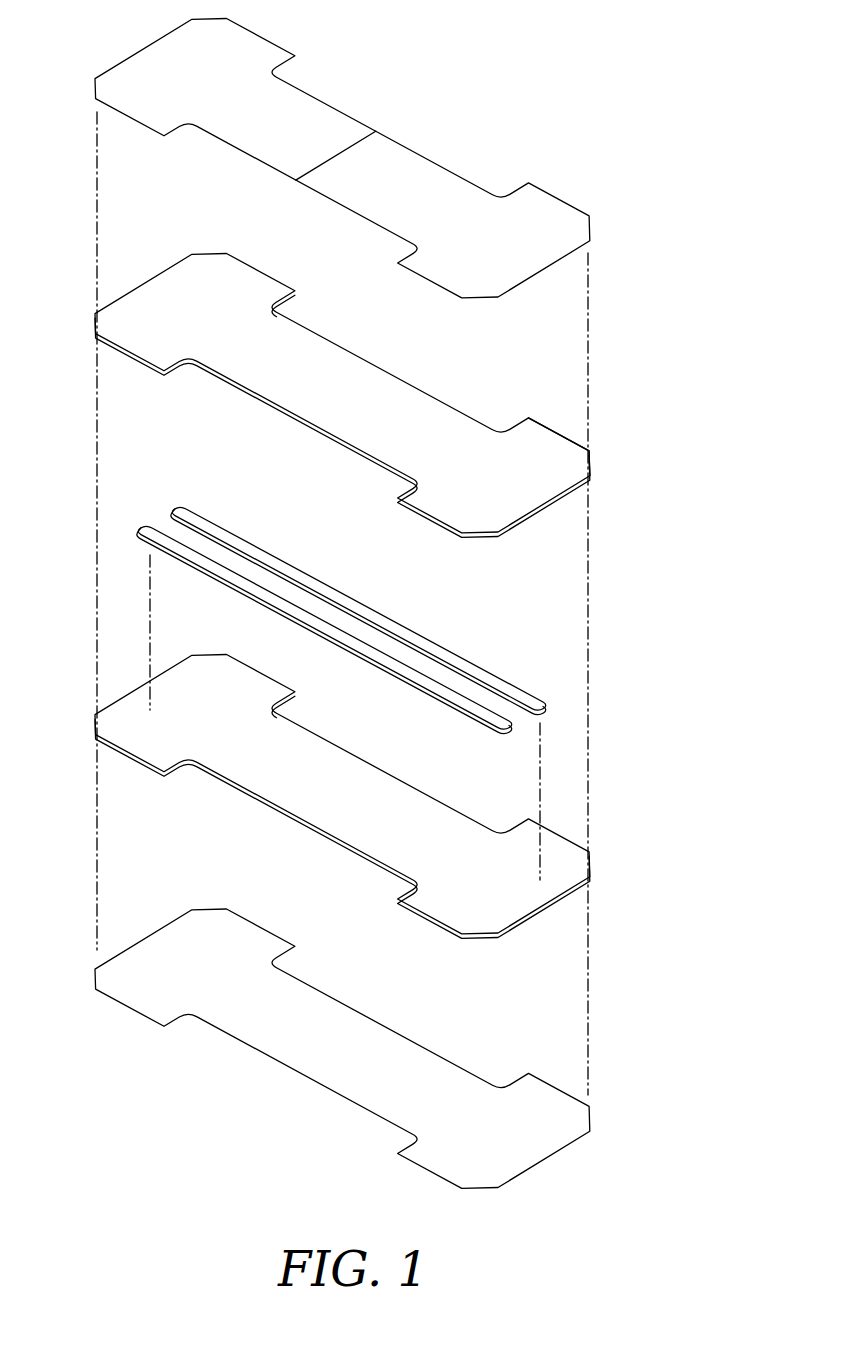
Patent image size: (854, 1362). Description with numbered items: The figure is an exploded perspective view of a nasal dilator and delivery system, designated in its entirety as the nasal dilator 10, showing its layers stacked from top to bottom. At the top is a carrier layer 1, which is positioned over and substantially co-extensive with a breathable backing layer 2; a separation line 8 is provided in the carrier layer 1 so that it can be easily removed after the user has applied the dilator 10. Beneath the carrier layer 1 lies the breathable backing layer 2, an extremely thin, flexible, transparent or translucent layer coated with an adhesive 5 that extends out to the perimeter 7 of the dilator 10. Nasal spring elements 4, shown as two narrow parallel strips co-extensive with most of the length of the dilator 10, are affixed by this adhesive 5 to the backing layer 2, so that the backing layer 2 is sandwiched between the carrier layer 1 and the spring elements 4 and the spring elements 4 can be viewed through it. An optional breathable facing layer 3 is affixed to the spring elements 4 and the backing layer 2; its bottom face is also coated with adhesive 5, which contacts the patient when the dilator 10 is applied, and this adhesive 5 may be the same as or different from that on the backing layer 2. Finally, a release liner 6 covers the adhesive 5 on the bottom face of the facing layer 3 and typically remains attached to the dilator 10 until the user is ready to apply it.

The carrier layer 1 is at (413, 168).
The breathable backing layer 2 is at (382, 395).
The breathable facing layer 3 is at (422, 828).
The nasal spring elements 4 is at (472, 700).
The adhesive 5 is at (432, 527).
The release liner 6 is at (300, 1047).
The perimeter 7 is at (555, 433).
The separation line 8 is at (343, 150).
The nasal dilator 10 is at (548, 90).